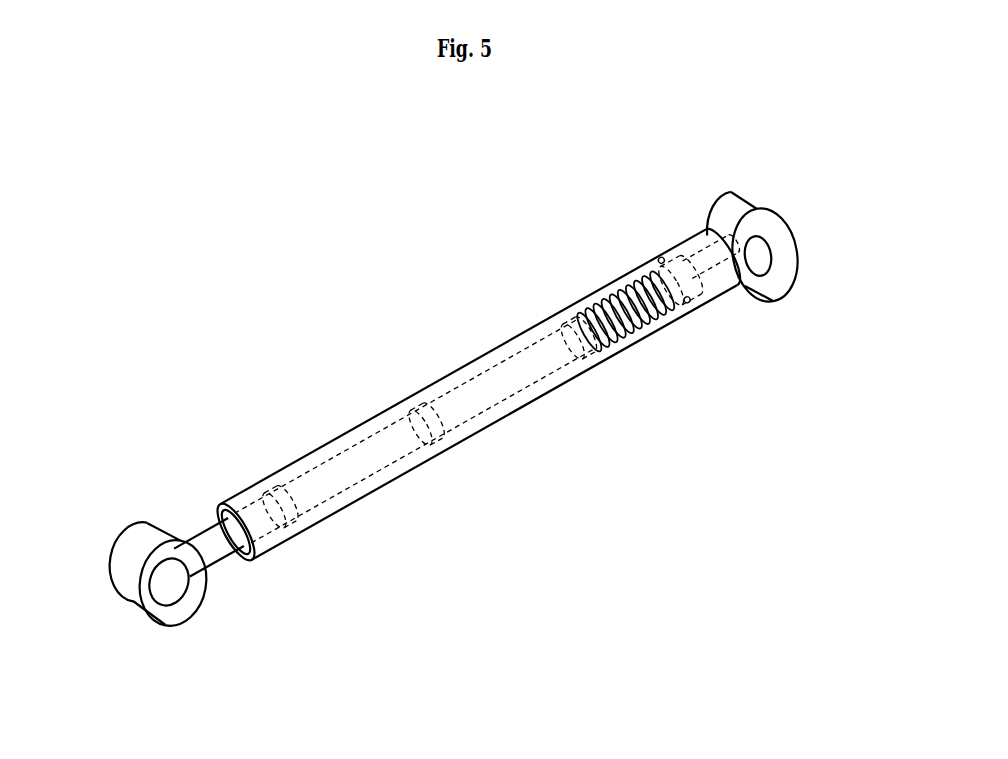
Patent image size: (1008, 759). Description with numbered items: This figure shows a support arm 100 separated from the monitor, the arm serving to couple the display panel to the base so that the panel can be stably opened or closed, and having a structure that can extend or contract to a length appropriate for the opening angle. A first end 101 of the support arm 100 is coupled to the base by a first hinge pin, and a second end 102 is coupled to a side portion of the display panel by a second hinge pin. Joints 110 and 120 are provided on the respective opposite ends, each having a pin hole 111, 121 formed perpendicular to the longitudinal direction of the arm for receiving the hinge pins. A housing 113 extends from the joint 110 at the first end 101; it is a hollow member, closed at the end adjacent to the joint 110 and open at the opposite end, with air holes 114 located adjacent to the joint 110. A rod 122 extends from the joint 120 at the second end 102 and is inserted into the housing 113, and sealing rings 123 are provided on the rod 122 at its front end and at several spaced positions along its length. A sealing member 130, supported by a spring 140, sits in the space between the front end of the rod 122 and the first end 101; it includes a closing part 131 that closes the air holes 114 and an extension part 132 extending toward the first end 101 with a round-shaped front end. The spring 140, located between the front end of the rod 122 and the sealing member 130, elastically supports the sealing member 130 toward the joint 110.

The support arm 100 is at (464, 405).
The first end 101 is at (779, 226).
The second end 102 is at (157, 585).
The joint 110 is at (801, 275).
The pin hole 111 is at (764, 243).
The housing 113 is at (482, 357).
The air holes 114 is at (665, 260).
The joint 120 is at (195, 623).
The pin hole 121 is at (167, 573).
The rod 122 is at (217, 533).
The sealing rings 123 is at (563, 322).
The sealing member 130 is at (718, 365).
The closing part 131 is at (690, 310).
The extension part 132 is at (708, 305).
The spring 140 is at (613, 297).